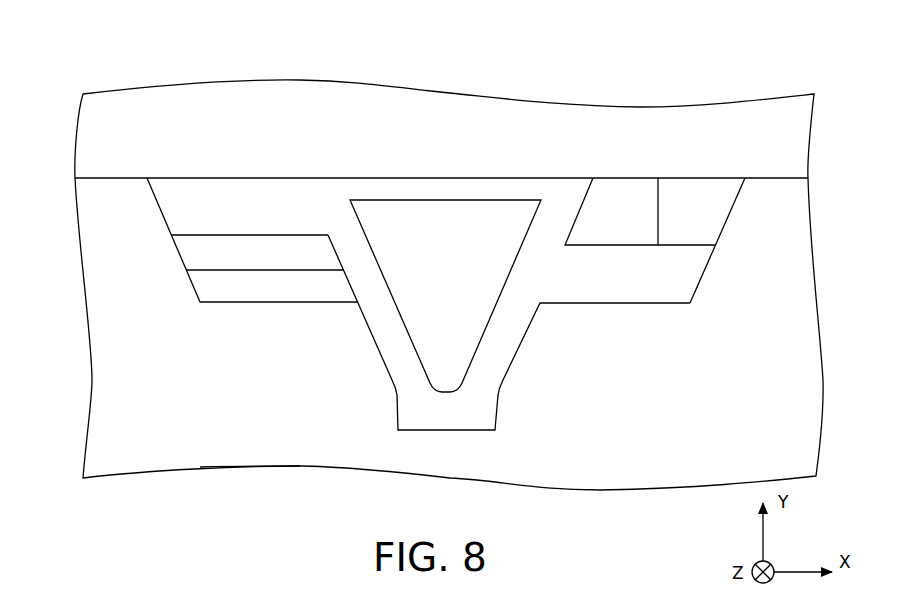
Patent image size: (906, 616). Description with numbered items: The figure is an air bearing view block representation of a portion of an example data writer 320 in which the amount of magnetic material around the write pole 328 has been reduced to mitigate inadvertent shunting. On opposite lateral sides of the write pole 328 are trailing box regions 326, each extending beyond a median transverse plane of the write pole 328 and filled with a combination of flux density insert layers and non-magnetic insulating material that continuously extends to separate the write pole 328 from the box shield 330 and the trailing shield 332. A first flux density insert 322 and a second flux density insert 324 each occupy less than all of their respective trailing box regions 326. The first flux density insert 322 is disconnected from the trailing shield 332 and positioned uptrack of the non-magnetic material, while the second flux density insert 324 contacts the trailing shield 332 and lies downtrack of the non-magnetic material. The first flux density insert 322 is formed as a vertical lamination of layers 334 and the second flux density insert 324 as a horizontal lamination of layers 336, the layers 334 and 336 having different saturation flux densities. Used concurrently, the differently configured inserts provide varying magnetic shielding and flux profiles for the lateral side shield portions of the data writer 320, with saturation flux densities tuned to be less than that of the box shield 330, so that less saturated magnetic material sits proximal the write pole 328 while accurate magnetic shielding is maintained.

The data writer 320 is at (127, 70).
The first flux density insert 322 is at (198, 304).
The second flux density insert 324 is at (727, 230).
The trailing box regions 326 is at (161, 214).
The write pole 328 is at (445, 296).
The box shield 330 is at (211, 468).
The trailing shield 332 is at (441, 150).
The layers 334 is at (264, 268).
The layers 336 is at (640, 211).